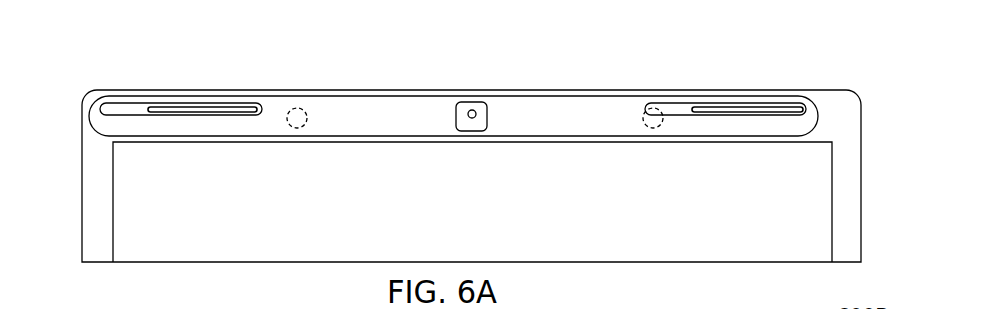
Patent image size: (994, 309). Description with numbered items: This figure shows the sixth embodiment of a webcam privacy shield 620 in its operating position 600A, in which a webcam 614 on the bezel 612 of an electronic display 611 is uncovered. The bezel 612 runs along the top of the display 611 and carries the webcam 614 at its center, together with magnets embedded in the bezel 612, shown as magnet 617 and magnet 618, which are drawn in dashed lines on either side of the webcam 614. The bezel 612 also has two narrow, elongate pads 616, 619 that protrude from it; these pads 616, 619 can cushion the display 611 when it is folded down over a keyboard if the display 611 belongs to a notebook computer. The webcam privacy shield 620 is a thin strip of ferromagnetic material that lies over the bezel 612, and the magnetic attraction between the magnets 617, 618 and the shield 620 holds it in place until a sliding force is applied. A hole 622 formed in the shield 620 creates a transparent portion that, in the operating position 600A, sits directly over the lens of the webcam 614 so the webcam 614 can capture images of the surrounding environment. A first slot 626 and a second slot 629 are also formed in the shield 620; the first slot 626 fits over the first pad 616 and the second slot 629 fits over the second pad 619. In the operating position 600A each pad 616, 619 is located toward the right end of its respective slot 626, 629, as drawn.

The operating position 600A is at (823, 79).
The electronic display 611 is at (187, 222).
The bezel 612 is at (82, 108).
The webcam 614 is at (471, 111).
The first pad 616 is at (180, 109).
The magnet 617 is at (292, 96).
The magnet 618 is at (637, 97).
The second pad 619 is at (713, 108).
The sixth webcam privacy shield 620 is at (365, 108).
The hole 622 is at (490, 112).
The first slot 626 is at (123, 104).
The second slot 629 is at (773, 104).